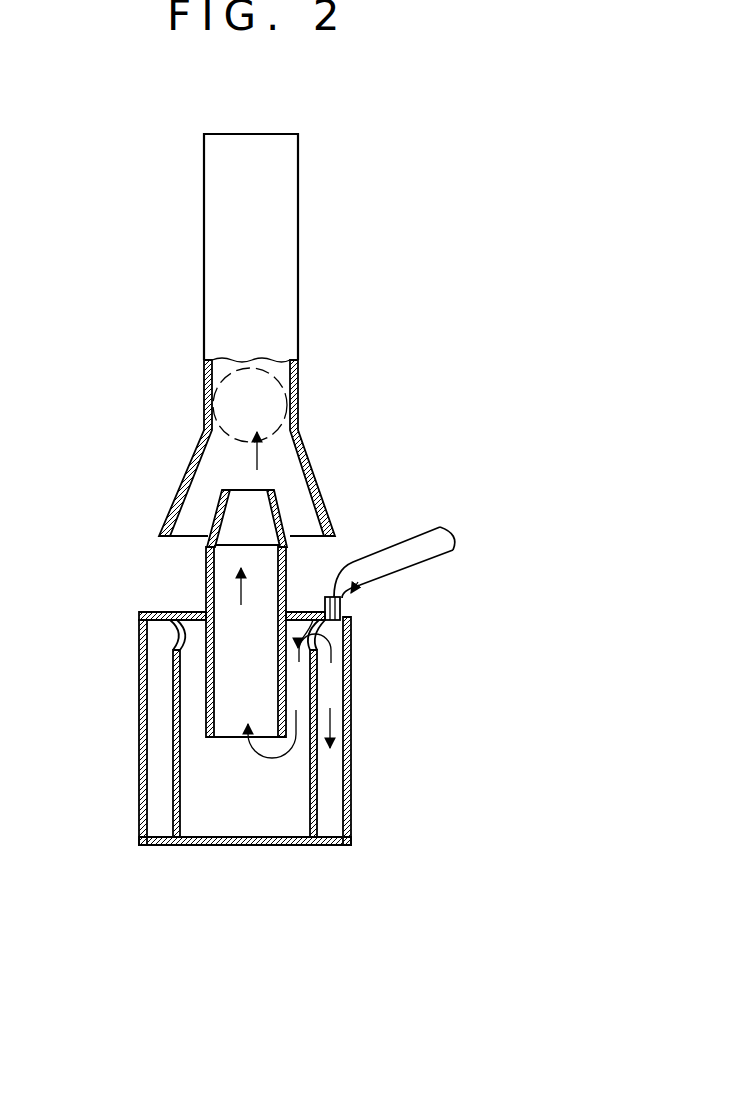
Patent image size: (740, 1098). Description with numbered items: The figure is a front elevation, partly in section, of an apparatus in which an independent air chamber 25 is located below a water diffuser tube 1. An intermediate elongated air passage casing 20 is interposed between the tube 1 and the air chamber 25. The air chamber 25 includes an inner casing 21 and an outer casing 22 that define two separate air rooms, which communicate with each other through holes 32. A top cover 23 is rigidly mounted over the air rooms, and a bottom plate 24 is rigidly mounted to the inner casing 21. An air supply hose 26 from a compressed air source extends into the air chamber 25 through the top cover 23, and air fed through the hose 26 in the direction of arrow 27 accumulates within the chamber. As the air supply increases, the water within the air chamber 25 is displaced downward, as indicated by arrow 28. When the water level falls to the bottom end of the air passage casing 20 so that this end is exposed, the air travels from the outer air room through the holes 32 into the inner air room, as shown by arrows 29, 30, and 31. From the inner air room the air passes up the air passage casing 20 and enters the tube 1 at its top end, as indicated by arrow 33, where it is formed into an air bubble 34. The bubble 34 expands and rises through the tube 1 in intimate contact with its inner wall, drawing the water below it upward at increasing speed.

The water diffuser tube 1 is at (275, 251).
The intermediate elongated air passage casing 20 is at (287, 578).
The inner casing 21 is at (318, 812).
The outer casing 22 is at (348, 768).
The top cover 23 is at (167, 610).
The bottom plate 24 is at (225, 843).
The independent air chamber 25 is at (135, 748).
The air supply hose 26 is at (333, 608).
The arrow 27 is at (358, 590).
The arrow 28 is at (333, 723).
The arrow 29 is at (327, 643).
The arrow 30 is at (272, 758).
The arrow 31 is at (240, 580).
The holes 32 is at (178, 633).
The arrow 33 is at (260, 445).
The air bubble 34 is at (273, 380).